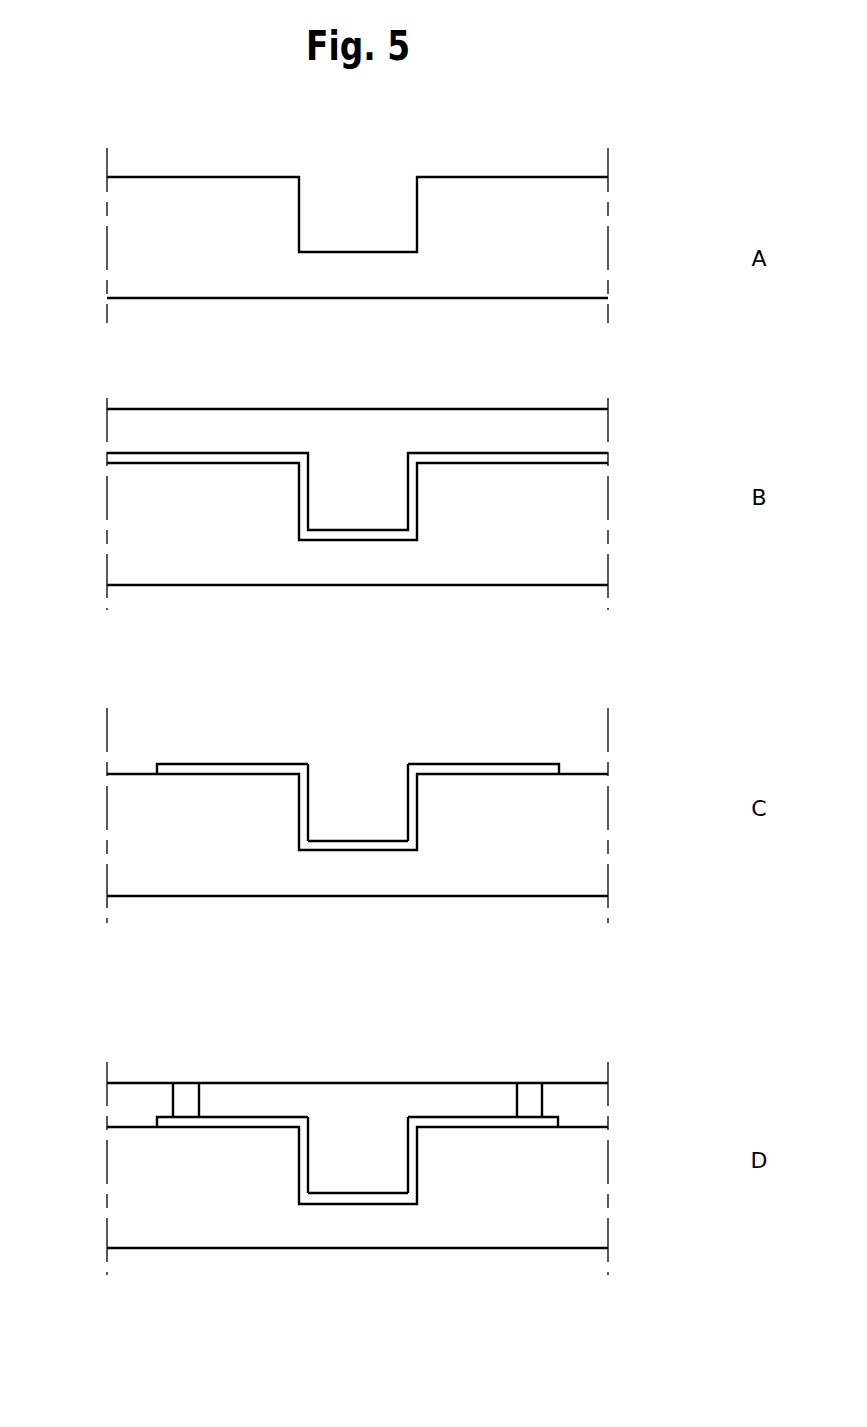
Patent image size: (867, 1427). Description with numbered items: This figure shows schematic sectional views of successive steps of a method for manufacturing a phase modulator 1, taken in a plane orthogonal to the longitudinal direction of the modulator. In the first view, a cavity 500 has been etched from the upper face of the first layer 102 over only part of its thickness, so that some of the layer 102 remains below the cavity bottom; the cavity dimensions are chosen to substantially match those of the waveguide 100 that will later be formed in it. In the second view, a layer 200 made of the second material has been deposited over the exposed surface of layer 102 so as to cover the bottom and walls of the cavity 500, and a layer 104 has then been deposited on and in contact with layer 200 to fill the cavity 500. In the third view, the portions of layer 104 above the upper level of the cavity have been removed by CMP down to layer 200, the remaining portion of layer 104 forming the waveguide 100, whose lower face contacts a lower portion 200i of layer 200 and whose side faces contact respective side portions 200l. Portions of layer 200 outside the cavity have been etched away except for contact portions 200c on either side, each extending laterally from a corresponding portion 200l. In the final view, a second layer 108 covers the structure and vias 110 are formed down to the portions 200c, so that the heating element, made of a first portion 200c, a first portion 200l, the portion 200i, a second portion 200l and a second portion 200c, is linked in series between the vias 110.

The phase modulator 1 is at (125, 1045).
The waveguide 100 is at (339, 819).
The first layer 102 is at (583, 253).
The layer 104 is at (594, 433).
The second layer 108 is at (598, 1105).
The vias 110 is at (185, 1083).
The layer 200 is at (600, 457).
The contact portions 200c is at (254, 768).
The side portions 200l is at (305, 813).
The lower portion 200i is at (353, 845).
The cavity 500 is at (353, 208).